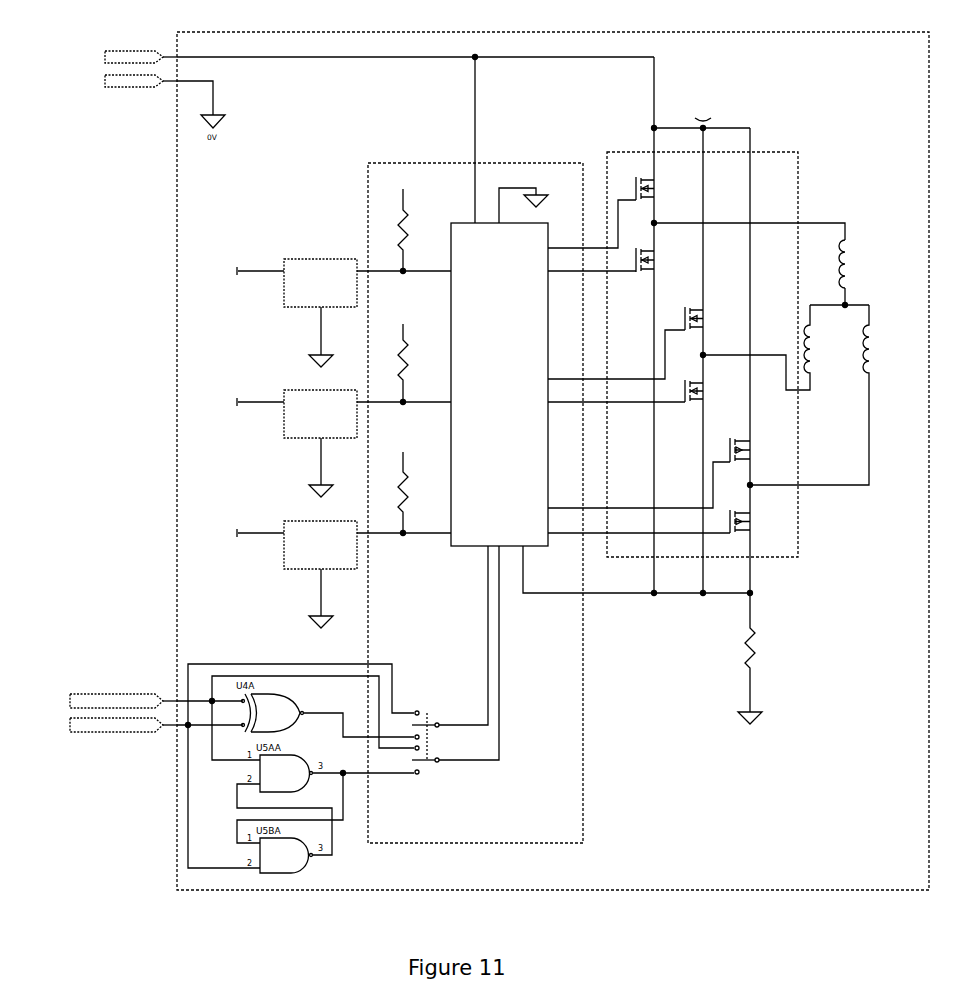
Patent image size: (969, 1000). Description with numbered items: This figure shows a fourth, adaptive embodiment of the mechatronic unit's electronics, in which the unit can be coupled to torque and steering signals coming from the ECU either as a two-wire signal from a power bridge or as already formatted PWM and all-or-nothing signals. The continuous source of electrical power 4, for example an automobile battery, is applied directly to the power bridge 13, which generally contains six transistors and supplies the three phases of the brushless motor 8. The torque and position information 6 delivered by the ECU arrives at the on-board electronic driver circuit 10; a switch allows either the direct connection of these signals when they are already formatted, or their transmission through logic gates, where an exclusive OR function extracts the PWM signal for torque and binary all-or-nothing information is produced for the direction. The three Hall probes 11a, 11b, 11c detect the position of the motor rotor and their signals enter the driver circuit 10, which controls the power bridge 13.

The continuous source of electrical power 4 is at (98, 68).
The torque and position information 6 is at (73, 711).
The brushless motor 8 is at (869, 295).
The on-board electronic driver circuit 10 is at (384, 210).
The Hall probe 11a is at (289, 283).
The Hall probe 11b is at (289, 413).
The Hall probe 11c is at (289, 545).
The power bridge 13 is at (635, 163).